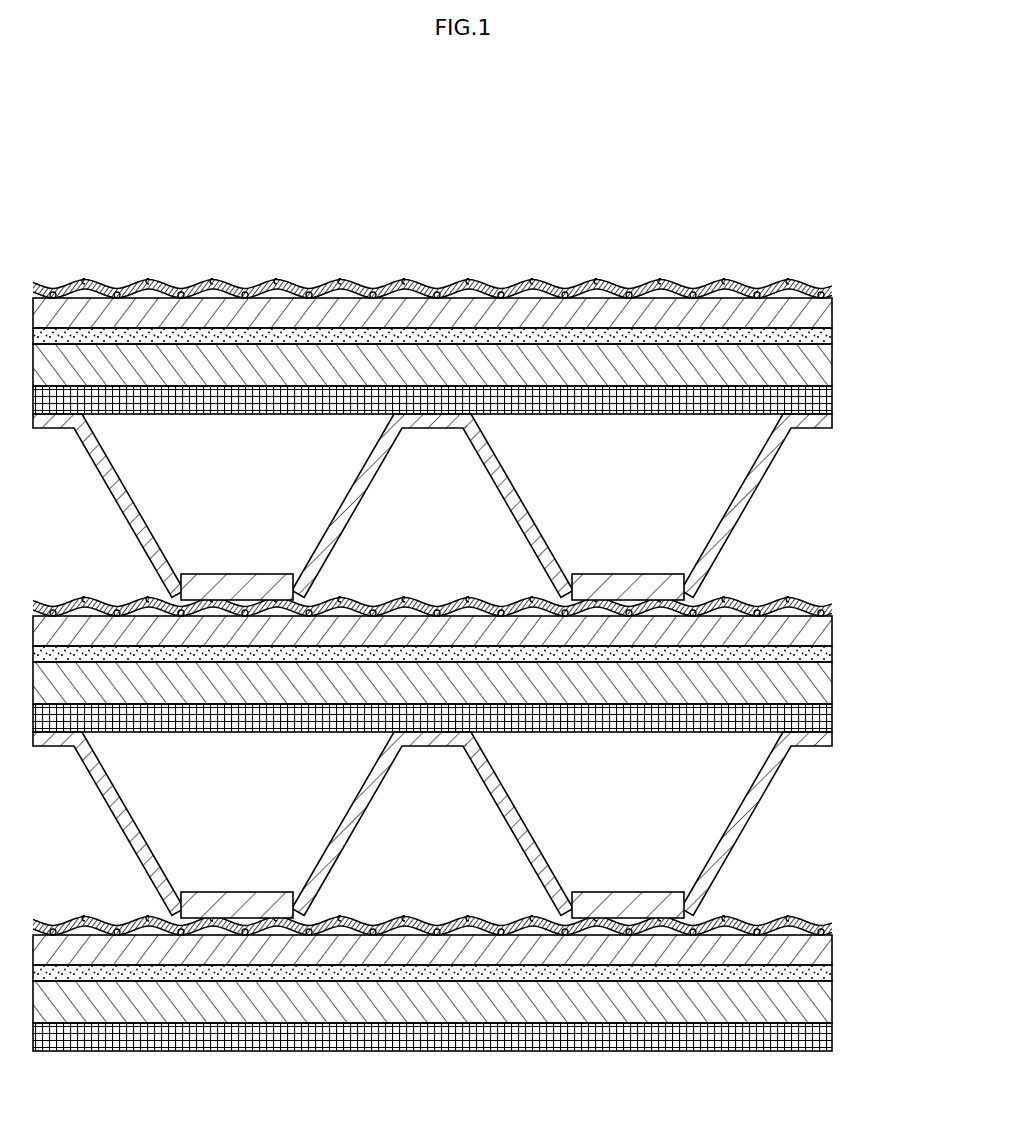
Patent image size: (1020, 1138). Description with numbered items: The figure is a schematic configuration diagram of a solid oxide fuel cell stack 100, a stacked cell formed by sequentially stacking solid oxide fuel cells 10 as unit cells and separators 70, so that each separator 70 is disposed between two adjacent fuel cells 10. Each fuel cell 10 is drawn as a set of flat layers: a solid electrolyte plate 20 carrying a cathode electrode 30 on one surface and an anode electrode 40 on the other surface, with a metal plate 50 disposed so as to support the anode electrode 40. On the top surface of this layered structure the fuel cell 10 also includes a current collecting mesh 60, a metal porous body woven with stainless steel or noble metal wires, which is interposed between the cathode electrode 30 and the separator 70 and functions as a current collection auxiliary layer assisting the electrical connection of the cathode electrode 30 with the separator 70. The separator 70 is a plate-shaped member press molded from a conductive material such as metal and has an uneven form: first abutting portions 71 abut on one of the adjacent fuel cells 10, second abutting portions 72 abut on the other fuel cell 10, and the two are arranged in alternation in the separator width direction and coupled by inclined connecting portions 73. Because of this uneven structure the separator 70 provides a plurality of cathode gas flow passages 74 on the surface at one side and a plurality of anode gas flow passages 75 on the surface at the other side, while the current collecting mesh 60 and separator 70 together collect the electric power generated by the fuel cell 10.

The solid oxide fuel cell stack 100 is at (802, 186).
The solid oxide fuel cell 10 is at (485, 665).
The solid electrolyte plate 20 is at (464, 662).
The cathode electrode 30 is at (464, 633).
The anode electrode 40 is at (464, 684).
The metal plate 50 is at (464, 719).
The current collecting mesh 60 is at (458, 609).
The separator 70 is at (441, 666).
The first abutting portion 71 is at (432, 717).
The second abutting portion 72 is at (432, 610).
The connecting portion 73 is at (432, 665).
The cathode gas flow passage 74 is at (419, 568).
The anode gas flow passage 75 is at (234, 493).